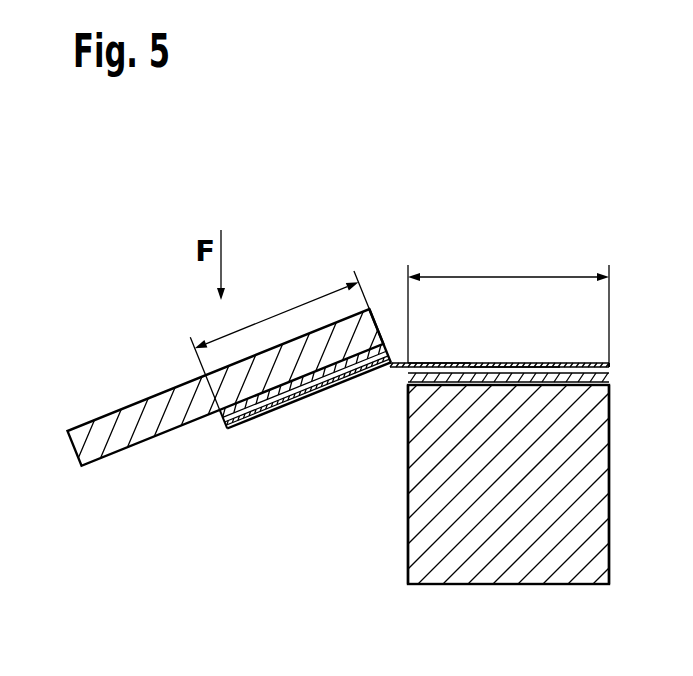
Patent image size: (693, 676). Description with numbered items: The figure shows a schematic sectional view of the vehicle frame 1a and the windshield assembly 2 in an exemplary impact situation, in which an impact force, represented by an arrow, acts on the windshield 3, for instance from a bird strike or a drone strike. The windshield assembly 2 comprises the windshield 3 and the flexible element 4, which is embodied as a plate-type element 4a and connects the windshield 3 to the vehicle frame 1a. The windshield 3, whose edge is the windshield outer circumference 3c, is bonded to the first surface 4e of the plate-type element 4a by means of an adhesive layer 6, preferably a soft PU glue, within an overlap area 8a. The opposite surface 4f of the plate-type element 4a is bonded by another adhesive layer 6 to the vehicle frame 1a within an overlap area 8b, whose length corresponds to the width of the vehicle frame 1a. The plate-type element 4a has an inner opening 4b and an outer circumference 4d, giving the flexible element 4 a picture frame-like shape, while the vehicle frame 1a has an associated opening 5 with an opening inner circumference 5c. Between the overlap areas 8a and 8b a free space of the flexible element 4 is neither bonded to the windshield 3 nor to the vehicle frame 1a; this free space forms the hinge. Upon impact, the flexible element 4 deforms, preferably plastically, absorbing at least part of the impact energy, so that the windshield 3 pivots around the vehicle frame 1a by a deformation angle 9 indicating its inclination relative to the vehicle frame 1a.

The vehicle frame 1a is at (609, 482).
The windshield assembly 2 is at (172, 184).
The windshield 3 is at (111, 400).
The windshield outer circumference 3c is at (387, 308).
The flexible element 4 is at (578, 351).
The plate-type element 4a is at (492, 368).
The inner opening 4b is at (206, 449).
The outer circumference 4d is at (622, 361).
The first surface 4e is at (452, 363).
The surface 4f is at (264, 414).
The opening 5 is at (395, 490).
The opening inner circumference 5c is at (395, 537).
The adhesive layer 6 is at (216, 438).
The overlap area 8a is at (275, 317).
The overlap area 8b is at (508, 277).
The deformation angle 9 is at (394, 433).